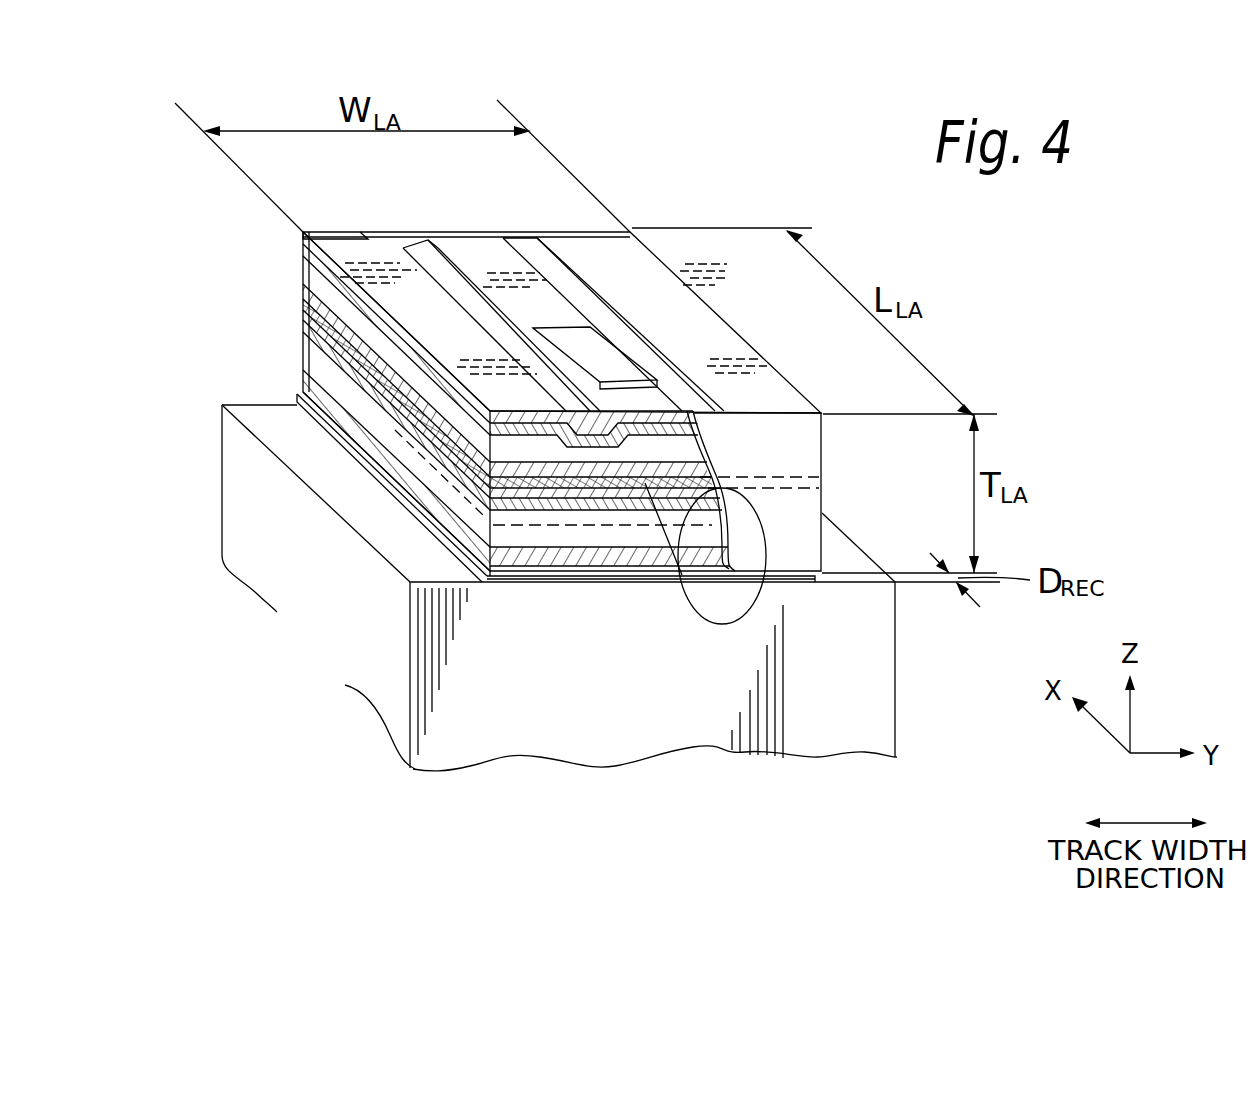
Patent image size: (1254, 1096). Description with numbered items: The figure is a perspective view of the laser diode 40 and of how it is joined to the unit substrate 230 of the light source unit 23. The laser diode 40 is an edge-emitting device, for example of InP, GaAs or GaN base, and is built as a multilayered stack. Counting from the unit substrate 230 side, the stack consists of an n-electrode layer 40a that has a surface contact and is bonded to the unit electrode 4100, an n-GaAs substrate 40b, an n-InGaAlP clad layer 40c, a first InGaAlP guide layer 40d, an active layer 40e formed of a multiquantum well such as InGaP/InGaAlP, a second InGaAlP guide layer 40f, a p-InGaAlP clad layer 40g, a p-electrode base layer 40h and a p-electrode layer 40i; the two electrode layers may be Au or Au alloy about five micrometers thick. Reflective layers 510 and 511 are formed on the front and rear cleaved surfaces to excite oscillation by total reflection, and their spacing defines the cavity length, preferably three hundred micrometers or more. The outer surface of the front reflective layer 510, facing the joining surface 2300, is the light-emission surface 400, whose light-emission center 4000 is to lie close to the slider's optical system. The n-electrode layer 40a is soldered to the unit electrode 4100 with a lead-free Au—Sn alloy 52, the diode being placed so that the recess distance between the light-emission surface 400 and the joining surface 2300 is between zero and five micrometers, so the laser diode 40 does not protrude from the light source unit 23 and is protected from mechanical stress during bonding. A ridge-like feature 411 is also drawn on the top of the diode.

The light source unit 23 is at (663, 190).
The laser diode 40 is at (698, 327).
The n-electrode layer 40a is at (377, 478).
The n-GaAs substrate 40b is at (373, 430).
The n-InGaAlP clad layer 40c is at (377, 422).
The first InGaAlP guide layer 40d is at (307, 378).
The active layer 40e is at (303, 353).
The second InGaAlP guide layer 40f is at (303, 323).
The p-InGaAlP clad layer 40g is at (303, 285).
The p-electrode base layer 40h is at (303, 257).
The p-electrode layer 40i is at (303, 232).
The Au—Sn alloy 52 is at (450, 513).
The unit substrate 230 is at (882, 620).
The light-emission surface 400 is at (785, 550).
The ridge portion 411 is at (580, 343).
The reflective layer 510 is at (803, 446).
The reflective layer 511 is at (345, 232).
The joining surface 2300 is at (683, 710).
The light-emission center 4000 is at (645, 483).
The unit electrode 4100 is at (460, 548).